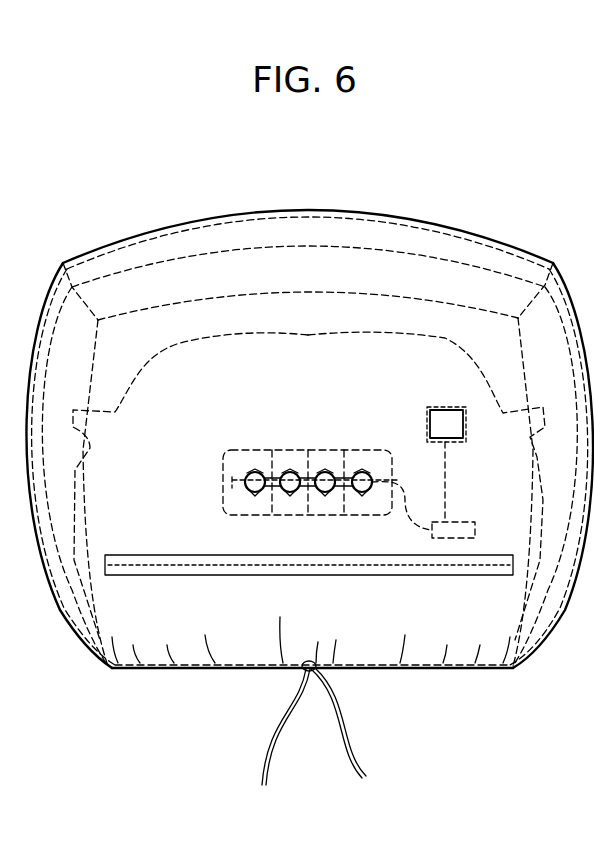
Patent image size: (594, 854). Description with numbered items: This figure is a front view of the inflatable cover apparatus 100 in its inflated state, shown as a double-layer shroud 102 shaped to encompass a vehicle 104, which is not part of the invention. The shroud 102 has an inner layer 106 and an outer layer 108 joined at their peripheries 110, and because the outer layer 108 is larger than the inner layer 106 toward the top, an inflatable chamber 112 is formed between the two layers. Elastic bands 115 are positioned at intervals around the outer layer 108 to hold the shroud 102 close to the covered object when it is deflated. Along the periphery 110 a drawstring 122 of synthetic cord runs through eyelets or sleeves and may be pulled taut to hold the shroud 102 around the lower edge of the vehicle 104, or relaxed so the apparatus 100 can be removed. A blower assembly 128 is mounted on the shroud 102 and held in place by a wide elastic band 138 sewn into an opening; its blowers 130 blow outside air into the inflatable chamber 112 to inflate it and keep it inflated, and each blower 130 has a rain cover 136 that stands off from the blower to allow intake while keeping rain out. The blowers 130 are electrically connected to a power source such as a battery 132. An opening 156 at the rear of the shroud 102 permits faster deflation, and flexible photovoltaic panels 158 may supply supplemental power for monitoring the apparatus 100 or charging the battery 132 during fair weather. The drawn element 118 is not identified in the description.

The inflatable cover apparatus 100 is at (533, 162).
The double-layer shroud 102 is at (414, 206).
The vehicle 104 is at (150, 400).
The inner layer 106 is at (455, 342).
The outer layer 108 is at (208, 216).
The periphery 110 is at (418, 673).
The inflatable chamber 112 is at (333, 284).
The elastic bands 115 is at (322, 220).
The cord knot 118 is at (311, 660).
The drawstring 122 is at (258, 762).
The blower assembly 128 is at (254, 414).
The blowers 130 is at (248, 478).
The battery 132 is at (460, 522).
The rain covers 136 is at (362, 478).
The wide elastic band 138 is at (222, 503).
The Velcro opening 156 is at (128, 556).
The flexible photovoltaic panels 158 is at (443, 418).